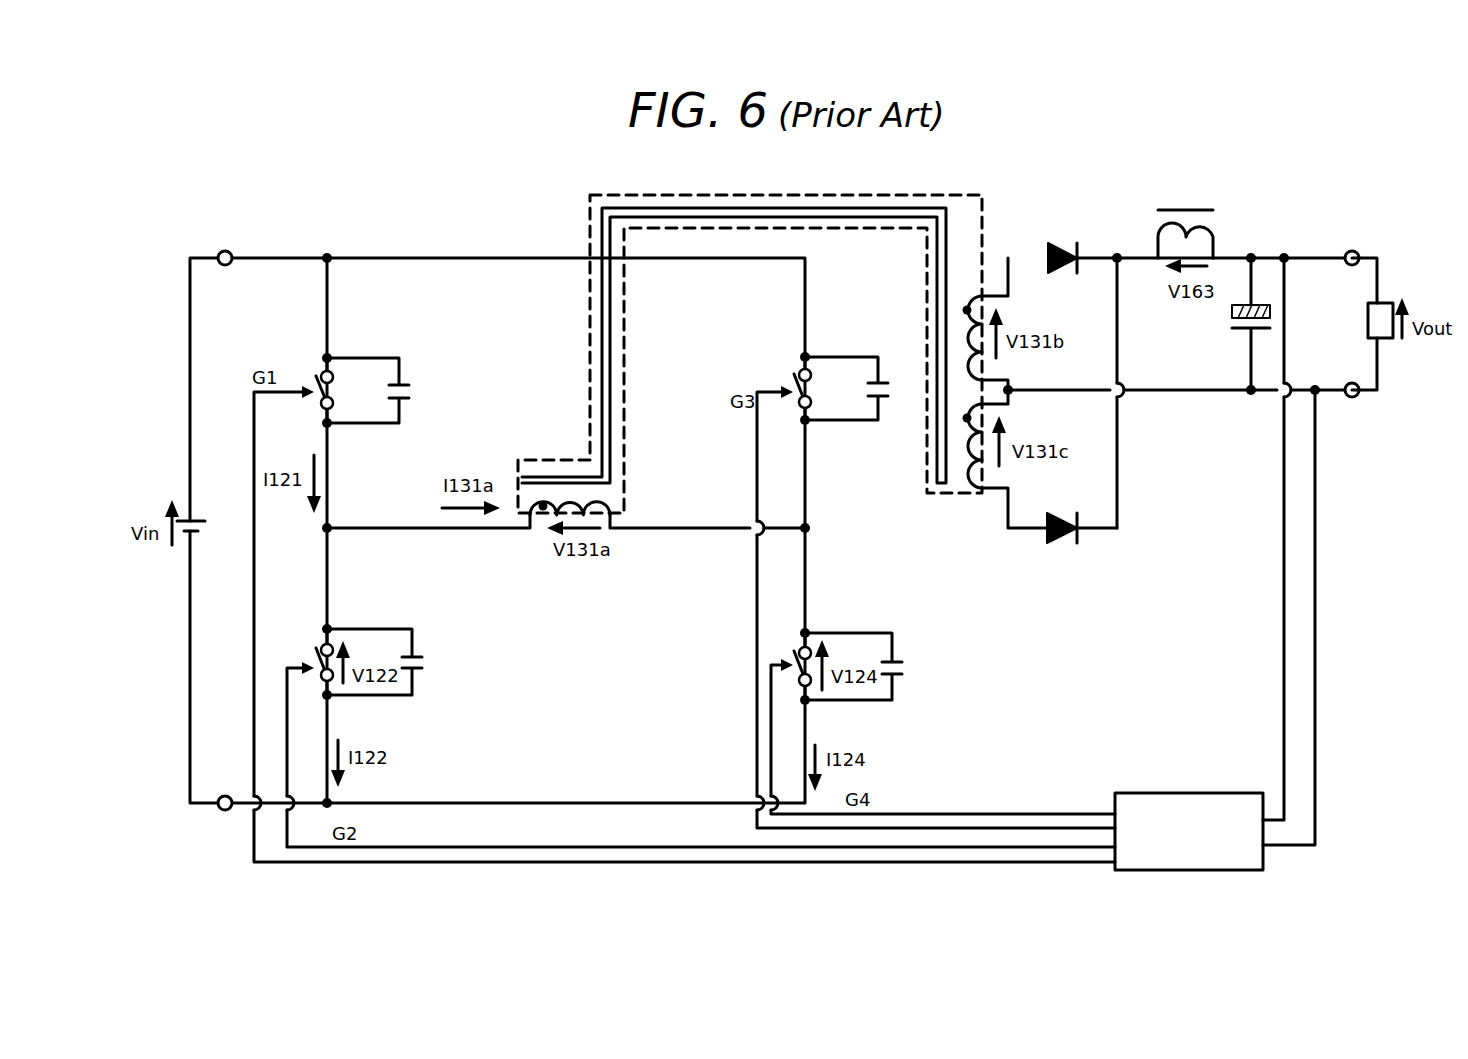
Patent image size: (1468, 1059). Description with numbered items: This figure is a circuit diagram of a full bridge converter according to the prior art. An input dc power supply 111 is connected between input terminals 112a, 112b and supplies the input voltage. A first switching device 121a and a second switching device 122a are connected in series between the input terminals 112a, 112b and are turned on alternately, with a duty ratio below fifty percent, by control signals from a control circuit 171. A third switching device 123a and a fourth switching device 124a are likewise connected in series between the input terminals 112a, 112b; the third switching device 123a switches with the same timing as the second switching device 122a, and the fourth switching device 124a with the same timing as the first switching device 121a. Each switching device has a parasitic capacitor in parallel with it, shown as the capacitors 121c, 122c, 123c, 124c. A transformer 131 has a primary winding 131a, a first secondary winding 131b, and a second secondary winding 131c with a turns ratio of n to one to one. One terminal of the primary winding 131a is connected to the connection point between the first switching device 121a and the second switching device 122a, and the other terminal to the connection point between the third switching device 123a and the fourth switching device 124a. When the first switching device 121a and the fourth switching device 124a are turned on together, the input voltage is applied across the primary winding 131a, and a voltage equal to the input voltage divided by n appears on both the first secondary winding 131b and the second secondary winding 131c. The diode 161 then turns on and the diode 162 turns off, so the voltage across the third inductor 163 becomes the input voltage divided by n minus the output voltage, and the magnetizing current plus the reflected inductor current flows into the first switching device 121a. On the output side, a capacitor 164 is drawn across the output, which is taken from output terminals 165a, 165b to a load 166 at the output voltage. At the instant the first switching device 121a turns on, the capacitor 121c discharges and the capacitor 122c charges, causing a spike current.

The input dc power supply 111 is at (195, 519).
The input terminal 112a is at (225, 251).
The input terminal 112b is at (225, 811).
The first switching device 121a is at (319, 374).
The capacitor 121c is at (405, 386).
The second switching device 122a is at (320, 649).
The capacitor 122c is at (417, 657).
The third switching device 123a is at (799, 374).
The capacitor 123c is at (884, 398).
The fourth switching device 124a is at (798, 684).
The capacitor 124c is at (895, 660).
The transformer 131 is at (880, 236).
The primary winding 131a is at (590, 492).
The first secondary winding 131b is at (979, 320).
The second secondary winding 131c is at (969, 464).
The diode 161 is at (1078, 245).
The diode 162 is at (1082, 533).
The third inductor 163 is at (1214, 240).
The smoothing capacitor 164 is at (1243, 323).
The output terminal 165a is at (1352, 251).
The output terminal 165b is at (1352, 398).
The load 166 is at (1380, 303).
The control circuit 171 is at (1184, 793).